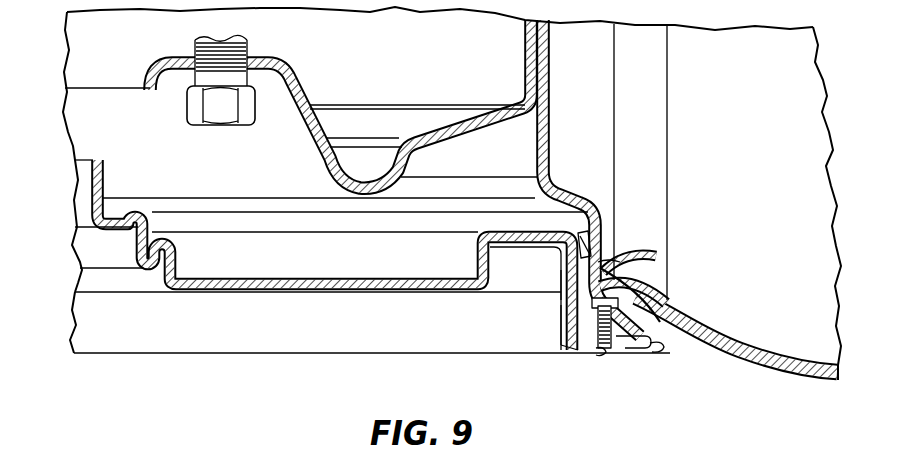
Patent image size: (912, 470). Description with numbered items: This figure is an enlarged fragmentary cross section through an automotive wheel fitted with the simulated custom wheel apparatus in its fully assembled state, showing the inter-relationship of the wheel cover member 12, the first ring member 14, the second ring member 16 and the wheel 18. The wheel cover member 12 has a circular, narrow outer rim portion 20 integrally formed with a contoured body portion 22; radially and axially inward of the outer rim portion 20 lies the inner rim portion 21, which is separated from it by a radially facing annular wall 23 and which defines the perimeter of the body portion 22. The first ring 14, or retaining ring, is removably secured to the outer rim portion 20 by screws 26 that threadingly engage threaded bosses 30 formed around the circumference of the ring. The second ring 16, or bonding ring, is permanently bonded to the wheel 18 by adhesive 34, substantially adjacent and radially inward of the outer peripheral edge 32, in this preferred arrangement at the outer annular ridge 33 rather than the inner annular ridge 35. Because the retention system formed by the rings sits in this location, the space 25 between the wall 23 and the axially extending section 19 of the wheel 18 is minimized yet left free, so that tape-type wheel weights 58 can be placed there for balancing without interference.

The wheel cover member 12 is at (384, 352).
The first ring member 14 is at (568, 348).
The second ring member 16 is at (654, 310).
The automotive wheel 18 is at (553, 117).
The axially extending section 19 is at (618, 266).
The outer rim portion 20 is at (617, 350).
The inner rim portion 21 is at (542, 246).
The contoured body portion 22 is at (405, 291).
The radially facing annular wall 23 is at (562, 322).
The space 25 is at (562, 283).
The screws 26 is at (601, 357).
The threaded bosses 30 is at (634, 348).
The outer peripheral edge 32 is at (655, 348).
The outer annular ridge 33 is at (650, 287).
The adhesive 34 is at (630, 270).
The inner annular ridge 35 is at (568, 190).
The tape-type wheel weights 58 is at (598, 257).